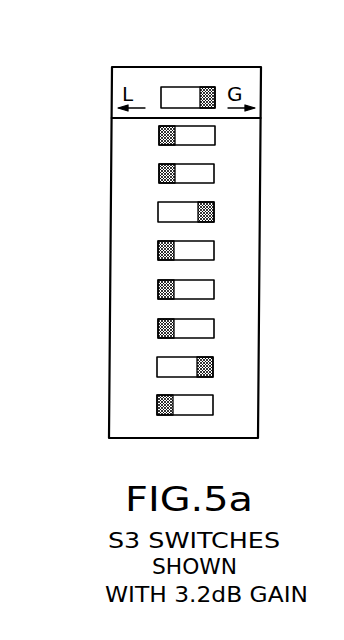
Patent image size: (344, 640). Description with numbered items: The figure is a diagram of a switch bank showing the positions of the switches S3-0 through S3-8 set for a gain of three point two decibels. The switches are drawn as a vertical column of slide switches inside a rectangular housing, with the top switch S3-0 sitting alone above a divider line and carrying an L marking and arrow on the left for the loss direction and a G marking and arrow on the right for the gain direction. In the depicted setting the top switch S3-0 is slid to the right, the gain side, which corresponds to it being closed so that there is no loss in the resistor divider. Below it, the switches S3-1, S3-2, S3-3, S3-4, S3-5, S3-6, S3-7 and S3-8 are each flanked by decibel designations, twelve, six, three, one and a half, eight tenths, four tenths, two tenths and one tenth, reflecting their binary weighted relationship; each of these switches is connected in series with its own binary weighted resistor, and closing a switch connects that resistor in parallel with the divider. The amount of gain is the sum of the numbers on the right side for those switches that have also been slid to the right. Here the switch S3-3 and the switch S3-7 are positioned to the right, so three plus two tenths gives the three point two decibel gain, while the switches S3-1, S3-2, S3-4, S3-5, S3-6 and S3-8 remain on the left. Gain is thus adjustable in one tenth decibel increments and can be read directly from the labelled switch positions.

The switch S3-0 is at (179, 87).
The switch S3-1 is at (182, 146).
The switch S3-2 is at (182, 184).
The switch S3-3 is at (175, 223).
The switch S3-4 is at (178, 261).
The switch S3-5 is at (178, 300).
The switch S3-6 is at (178, 339).
The switch S3-7 is at (175, 378).
The switch S3-8 is at (175, 417).